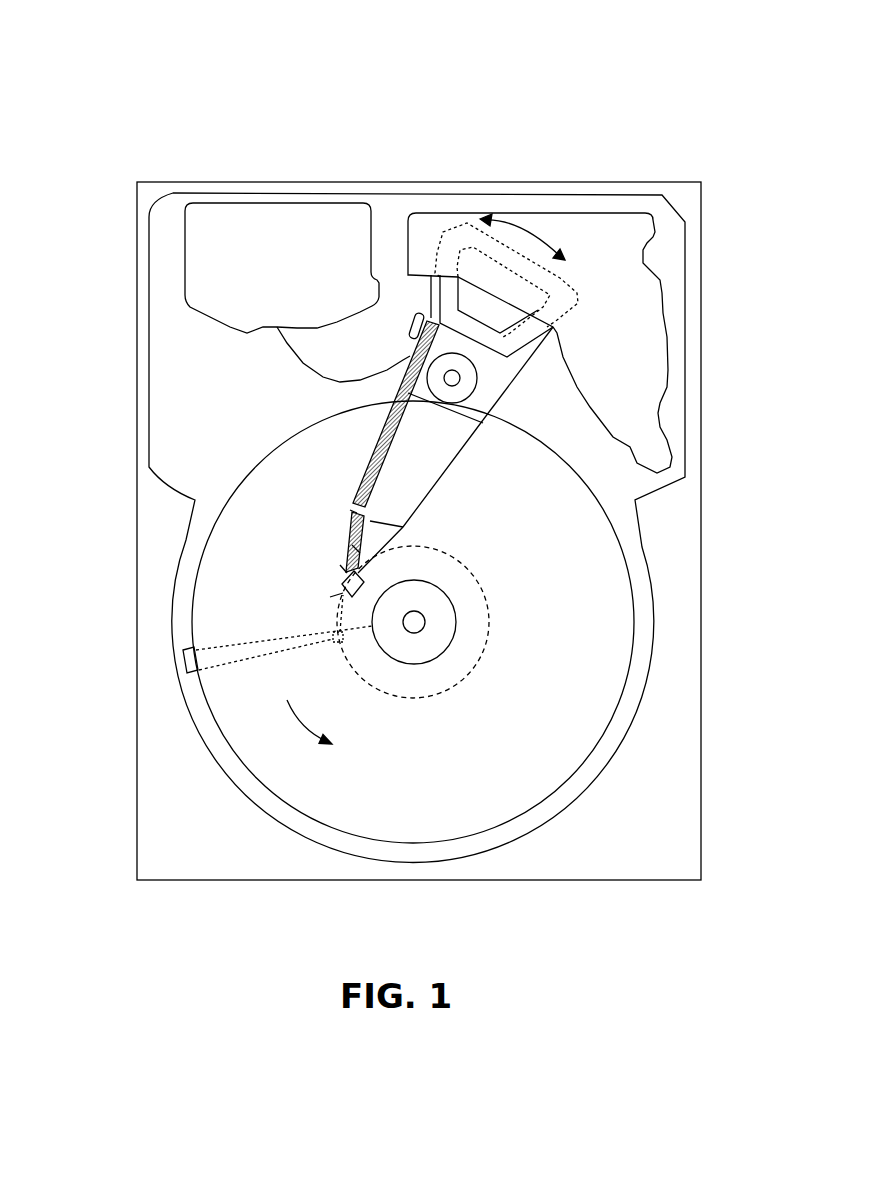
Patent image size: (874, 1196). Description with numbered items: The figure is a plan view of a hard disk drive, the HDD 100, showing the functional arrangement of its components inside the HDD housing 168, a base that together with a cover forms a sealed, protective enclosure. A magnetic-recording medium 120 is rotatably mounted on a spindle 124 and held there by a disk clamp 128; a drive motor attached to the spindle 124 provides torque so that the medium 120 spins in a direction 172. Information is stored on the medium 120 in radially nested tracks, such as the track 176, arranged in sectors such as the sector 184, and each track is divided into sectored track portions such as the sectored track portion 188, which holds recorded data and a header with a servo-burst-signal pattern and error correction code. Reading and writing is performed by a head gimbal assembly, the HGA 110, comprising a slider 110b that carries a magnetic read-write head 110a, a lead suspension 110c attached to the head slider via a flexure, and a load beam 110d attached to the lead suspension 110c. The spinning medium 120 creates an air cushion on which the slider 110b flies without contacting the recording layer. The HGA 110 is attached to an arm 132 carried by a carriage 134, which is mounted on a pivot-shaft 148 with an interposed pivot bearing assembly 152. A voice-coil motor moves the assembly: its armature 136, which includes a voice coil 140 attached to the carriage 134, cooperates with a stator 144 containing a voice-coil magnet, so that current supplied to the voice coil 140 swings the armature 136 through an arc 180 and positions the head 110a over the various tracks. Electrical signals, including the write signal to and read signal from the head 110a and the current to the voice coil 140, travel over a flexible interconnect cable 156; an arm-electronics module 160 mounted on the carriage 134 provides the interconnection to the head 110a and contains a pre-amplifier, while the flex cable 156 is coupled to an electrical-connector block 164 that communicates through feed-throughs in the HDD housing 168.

The hard disk drive 100 is at (77, 74).
The head gimbal assembly 110 is at (74, 456).
The magnetic read-write head 110a is at (330, 597).
The slider 110b is at (340, 565).
The lead suspension 110c is at (352, 545).
The load beam 110d is at (350, 510).
The magnetic-recording medium 120 is at (575, 583).
The spindle 124 is at (425, 620).
The disk clamp 128 is at (435, 637).
The arm 132 is at (410, 478).
The carriage 134 is at (467, 407).
The armature 136 is at (437, 305).
The voice coil 140 is at (450, 285).
The stator 144 is at (637, 297).
The pivot-shaft 148 is at (460, 378).
The pivot bearing assembly 152 is at (463, 397).
The flexible interconnect cable 156 is at (290, 347).
The arm-electronics module 160 is at (410, 357).
The electrical-connector block 164 is at (210, 268).
The HDD housing 168 is at (685, 194).
The direction 172 is at (317, 727).
The track 176 is at (483, 583).
The arc 180 is at (520, 228).
The sector 184 is at (182, 658).
The sectored track portion 188 is at (320, 640).